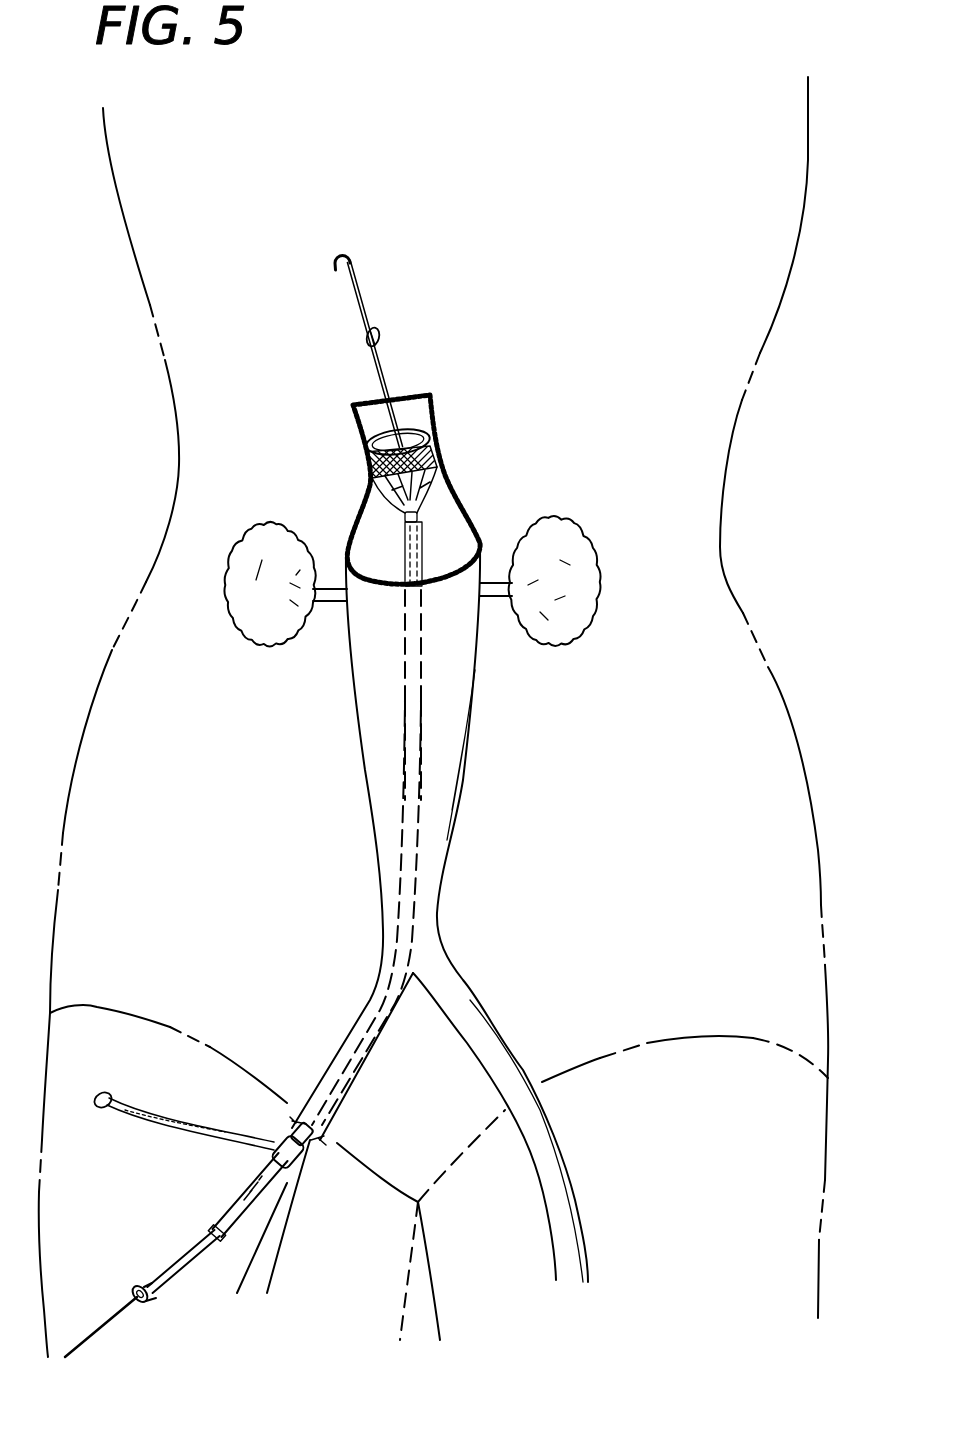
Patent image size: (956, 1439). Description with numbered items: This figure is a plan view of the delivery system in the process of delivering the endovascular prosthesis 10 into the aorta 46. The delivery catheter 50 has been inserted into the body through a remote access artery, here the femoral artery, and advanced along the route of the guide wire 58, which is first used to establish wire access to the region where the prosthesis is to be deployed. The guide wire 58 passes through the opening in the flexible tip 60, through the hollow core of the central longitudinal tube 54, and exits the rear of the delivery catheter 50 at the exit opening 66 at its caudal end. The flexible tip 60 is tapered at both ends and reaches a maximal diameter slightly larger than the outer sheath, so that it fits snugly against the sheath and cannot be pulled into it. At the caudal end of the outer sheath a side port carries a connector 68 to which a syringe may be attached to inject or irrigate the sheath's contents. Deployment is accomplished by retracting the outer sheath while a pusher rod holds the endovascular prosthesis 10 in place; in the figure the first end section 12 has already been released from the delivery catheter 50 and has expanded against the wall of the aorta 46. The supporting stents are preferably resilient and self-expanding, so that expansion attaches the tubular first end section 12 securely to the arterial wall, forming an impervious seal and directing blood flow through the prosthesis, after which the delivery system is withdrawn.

The endovascular prosthesis 10 is at (435, 455).
The first end section 12 is at (455, 507).
The aorta 46 is at (437, 390).
The delivery catheter 50 is at (418, 766).
The central longitudinal tube 54 is at (183, 1260).
The guide wire 58 is at (362, 277).
The flexible tip 60 is at (380, 333).
The exit opening 66 is at (153, 1295).
The connector 68 is at (287, 1127).